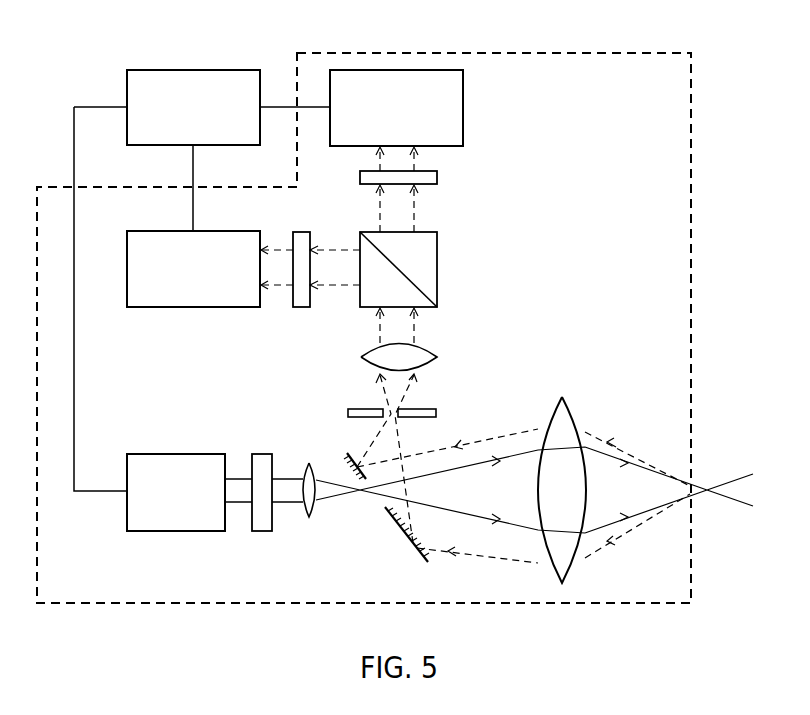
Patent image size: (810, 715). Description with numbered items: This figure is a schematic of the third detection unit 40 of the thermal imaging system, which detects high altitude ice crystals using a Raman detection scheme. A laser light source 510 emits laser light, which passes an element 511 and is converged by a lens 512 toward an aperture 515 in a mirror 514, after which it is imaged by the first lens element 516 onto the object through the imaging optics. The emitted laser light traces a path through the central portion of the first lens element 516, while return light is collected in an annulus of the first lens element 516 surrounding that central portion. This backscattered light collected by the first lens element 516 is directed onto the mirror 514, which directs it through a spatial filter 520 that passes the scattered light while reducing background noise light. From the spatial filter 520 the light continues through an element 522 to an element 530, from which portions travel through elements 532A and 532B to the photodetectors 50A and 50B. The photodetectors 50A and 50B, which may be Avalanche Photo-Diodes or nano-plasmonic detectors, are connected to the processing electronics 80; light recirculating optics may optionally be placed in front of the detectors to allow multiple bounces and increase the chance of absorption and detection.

The third detection unit 40 is at (694, 153).
The processing electronics 80 is at (143, 70).
The photodetector 50A is at (463, 97).
The photodetector 50B is at (168, 307).
The laser light source 510 is at (166, 531).
The filter plate 511 is at (265, 531).
The lens 512 is at (306, 465).
The mirror 514 is at (352, 459).
The aperture 515 is at (376, 500).
The first lens element 516 is at (572, 403).
The spatial filter 520 is at (436, 412).
The lens 522 is at (430, 348).
The beam splitter 530 is at (437, 252).
The filter 532A is at (437, 177).
The filter 532B is at (302, 307).